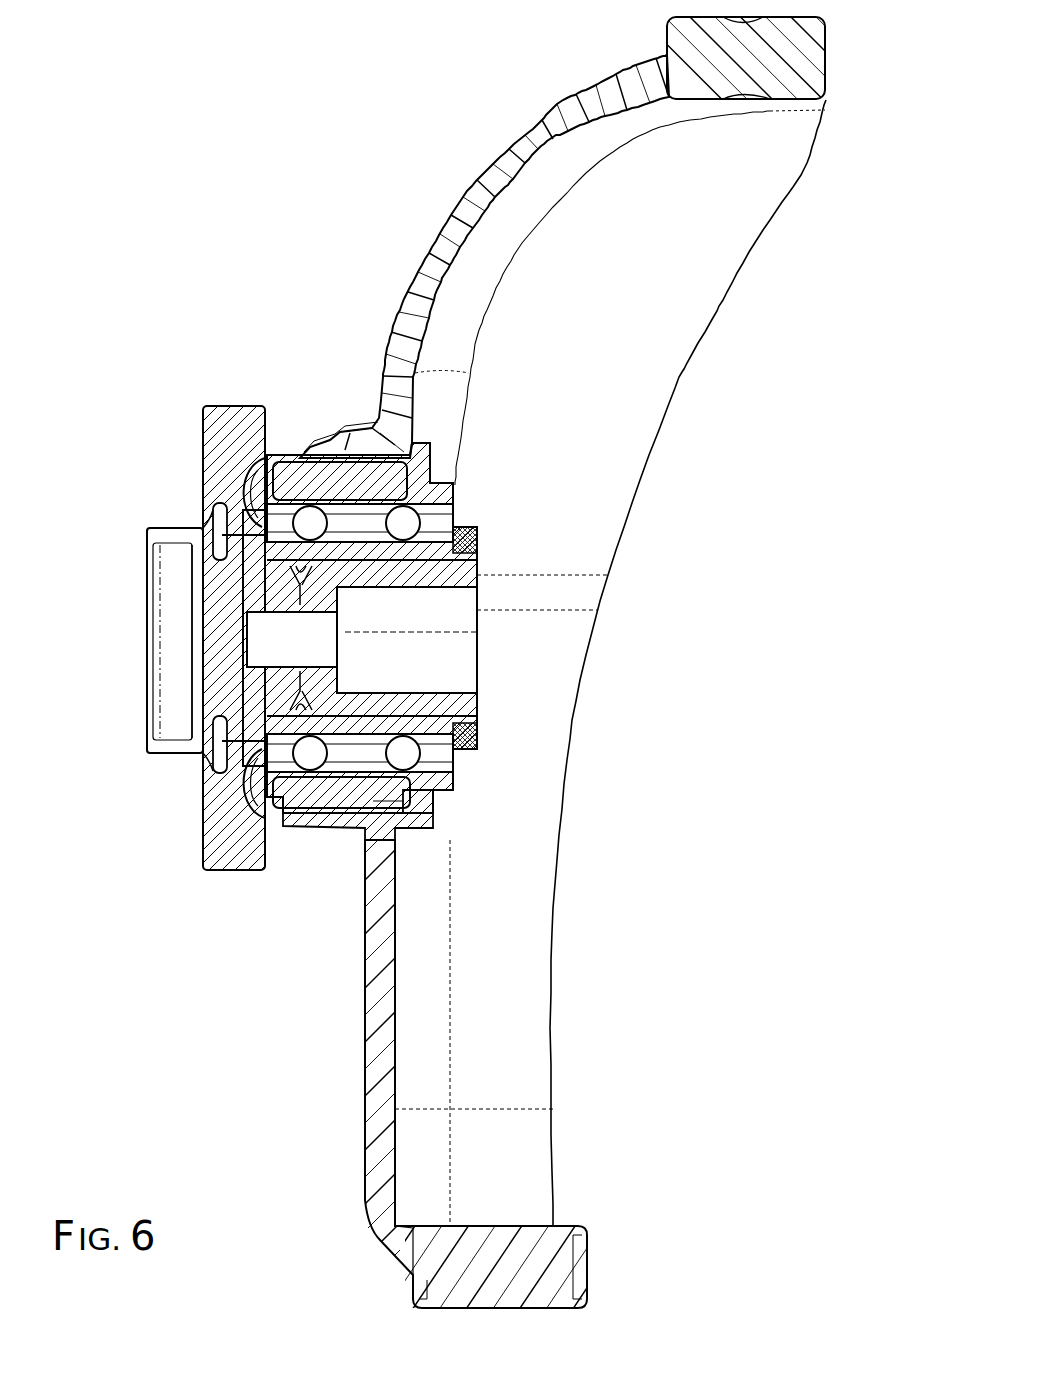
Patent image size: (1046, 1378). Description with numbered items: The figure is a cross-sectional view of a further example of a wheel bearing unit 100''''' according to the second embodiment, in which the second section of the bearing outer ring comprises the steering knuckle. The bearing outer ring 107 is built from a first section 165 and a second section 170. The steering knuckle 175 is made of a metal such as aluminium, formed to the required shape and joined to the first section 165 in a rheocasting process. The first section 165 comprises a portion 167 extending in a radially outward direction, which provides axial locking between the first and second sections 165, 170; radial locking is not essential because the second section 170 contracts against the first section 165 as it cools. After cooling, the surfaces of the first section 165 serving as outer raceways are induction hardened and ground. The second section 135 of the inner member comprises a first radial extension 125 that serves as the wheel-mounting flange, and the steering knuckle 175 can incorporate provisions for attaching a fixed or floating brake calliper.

The bearing unit 100''''' is at (447, 665).
The bearing outer ring 107 is at (315, 870).
The first radial extension 125 is at (237, 853).
The second section of the inner member 135 is at (257, 700).
The first section of the bearing outer ring 165 is at (475, 820).
The portion extending in a radially outward direction 167 is at (327, 440).
The second section of the bearing outer ring 170 is at (604, 618).
The steering knuckle 175 is at (373, 1157).